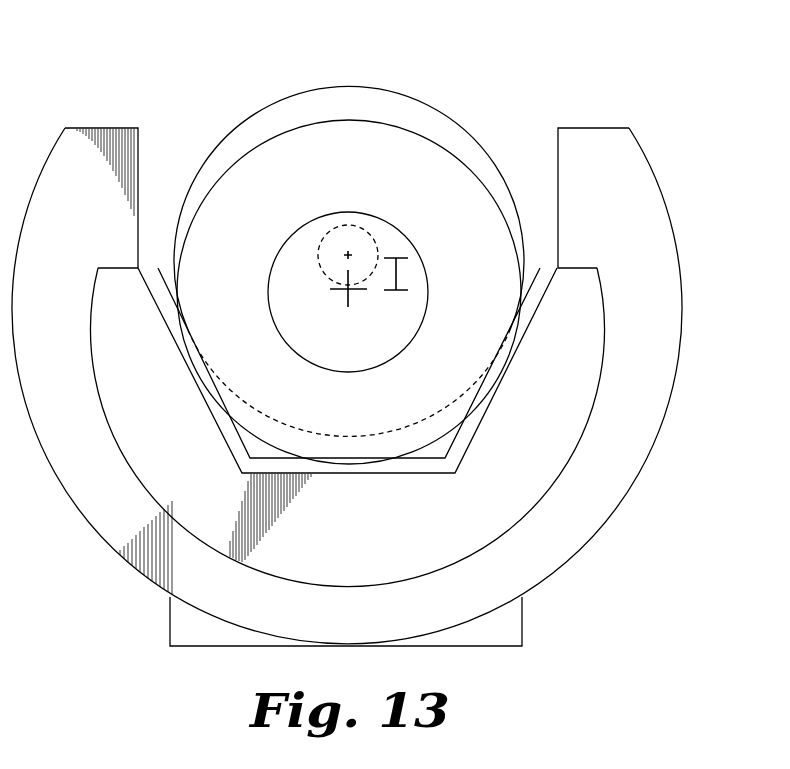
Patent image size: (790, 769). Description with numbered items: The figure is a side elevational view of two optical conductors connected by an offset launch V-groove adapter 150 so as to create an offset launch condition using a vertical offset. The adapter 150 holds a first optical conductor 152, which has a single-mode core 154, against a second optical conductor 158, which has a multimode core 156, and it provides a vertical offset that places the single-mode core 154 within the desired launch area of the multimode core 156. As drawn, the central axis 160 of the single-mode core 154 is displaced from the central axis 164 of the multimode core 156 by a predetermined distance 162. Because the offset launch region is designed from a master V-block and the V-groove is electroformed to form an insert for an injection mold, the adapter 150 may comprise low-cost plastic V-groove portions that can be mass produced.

The offset launch V-groove adapter 150 is at (657, 78).
The first optical conductor 152 is at (421, 100).
The single-mode core 154 is at (348, 227).
The multimode core 156 is at (400, 350).
The second optical conductor 158 is at (235, 160).
The central axis of core 154 160 is at (345, 253).
The predetermined distance 162 is at (403, 272).
The central axis of core 156 164 is at (348, 289).